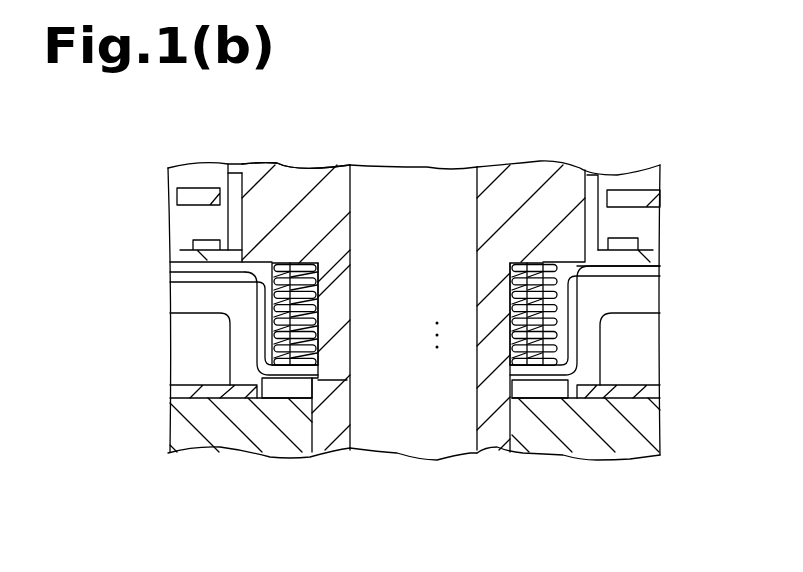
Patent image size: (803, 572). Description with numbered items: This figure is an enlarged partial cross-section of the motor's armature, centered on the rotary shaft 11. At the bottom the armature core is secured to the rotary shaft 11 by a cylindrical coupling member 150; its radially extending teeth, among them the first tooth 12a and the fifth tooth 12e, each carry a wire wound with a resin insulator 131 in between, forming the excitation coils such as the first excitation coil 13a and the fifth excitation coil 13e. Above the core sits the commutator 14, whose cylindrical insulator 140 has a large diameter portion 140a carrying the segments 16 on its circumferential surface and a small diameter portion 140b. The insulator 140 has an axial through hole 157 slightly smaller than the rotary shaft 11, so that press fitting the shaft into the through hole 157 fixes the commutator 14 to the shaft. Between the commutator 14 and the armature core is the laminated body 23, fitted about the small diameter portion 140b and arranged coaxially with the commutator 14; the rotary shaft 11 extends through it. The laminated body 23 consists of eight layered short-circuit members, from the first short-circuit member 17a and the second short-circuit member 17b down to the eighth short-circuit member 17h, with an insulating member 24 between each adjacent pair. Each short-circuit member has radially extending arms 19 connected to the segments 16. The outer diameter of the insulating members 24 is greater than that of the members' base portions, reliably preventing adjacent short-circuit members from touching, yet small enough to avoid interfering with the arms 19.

The rotary shaft 11 is at (407, 165).
The first tooth 12a is at (590, 447).
The fifth tooth 12e is at (280, 452).
The first excitation coil 13a is at (657, 365).
The fifth excitation coil 13e is at (187, 348).
The insulator 131 is at (172, 390).
The commutator 14 is at (523, 170).
The insulator 140 is at (325, 172).
The large diameter portion 140a is at (297, 167).
The small diameter portion 140b is at (257, 303).
The coupling member 150 is at (500, 447).
The through hole 157 is at (472, 170).
The segment 16 is at (232, 168).
The first short-circuit member 17a is at (510, 268).
The second short-circuit member 17b is at (510, 283).
The eighth short-circuit member 17h is at (510, 366).
The arm 19 is at (170, 266).
The laminated body 23 is at (590, 342).
The insulating member 24 is at (318, 282).